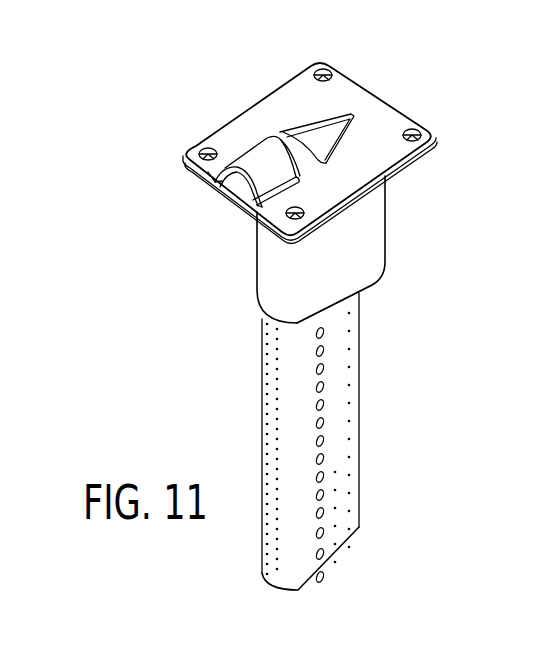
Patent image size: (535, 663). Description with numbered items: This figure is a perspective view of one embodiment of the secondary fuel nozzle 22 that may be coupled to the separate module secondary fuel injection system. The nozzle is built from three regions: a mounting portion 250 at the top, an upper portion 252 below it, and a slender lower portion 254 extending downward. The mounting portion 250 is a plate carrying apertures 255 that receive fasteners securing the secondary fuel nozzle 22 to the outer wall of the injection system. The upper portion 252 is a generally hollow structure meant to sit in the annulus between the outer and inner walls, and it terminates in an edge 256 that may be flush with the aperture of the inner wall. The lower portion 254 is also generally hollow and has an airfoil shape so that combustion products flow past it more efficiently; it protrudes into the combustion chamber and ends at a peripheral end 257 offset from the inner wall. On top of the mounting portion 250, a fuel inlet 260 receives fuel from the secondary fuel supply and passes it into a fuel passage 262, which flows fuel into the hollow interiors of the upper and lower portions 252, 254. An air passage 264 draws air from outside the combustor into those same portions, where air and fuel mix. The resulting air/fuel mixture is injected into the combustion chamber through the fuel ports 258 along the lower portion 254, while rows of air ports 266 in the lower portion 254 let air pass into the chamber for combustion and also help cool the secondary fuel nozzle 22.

The secondary fuel nozzle 22 is at (62, 149).
The mounting portion 250 is at (373, 104).
The upper portion 252 is at (365, 248).
The lower portion 254 is at (360, 437).
The apertures 255 is at (322, 68).
The edge 256 is at (362, 293).
The peripheral end 257 is at (292, 592).
The fuel ports 258 is at (325, 577).
The fuel inlet 260 is at (232, 190).
The fuel passage 262 is at (290, 143).
The air passage 264 is at (323, 139).
The air ports 266 is at (268, 420).